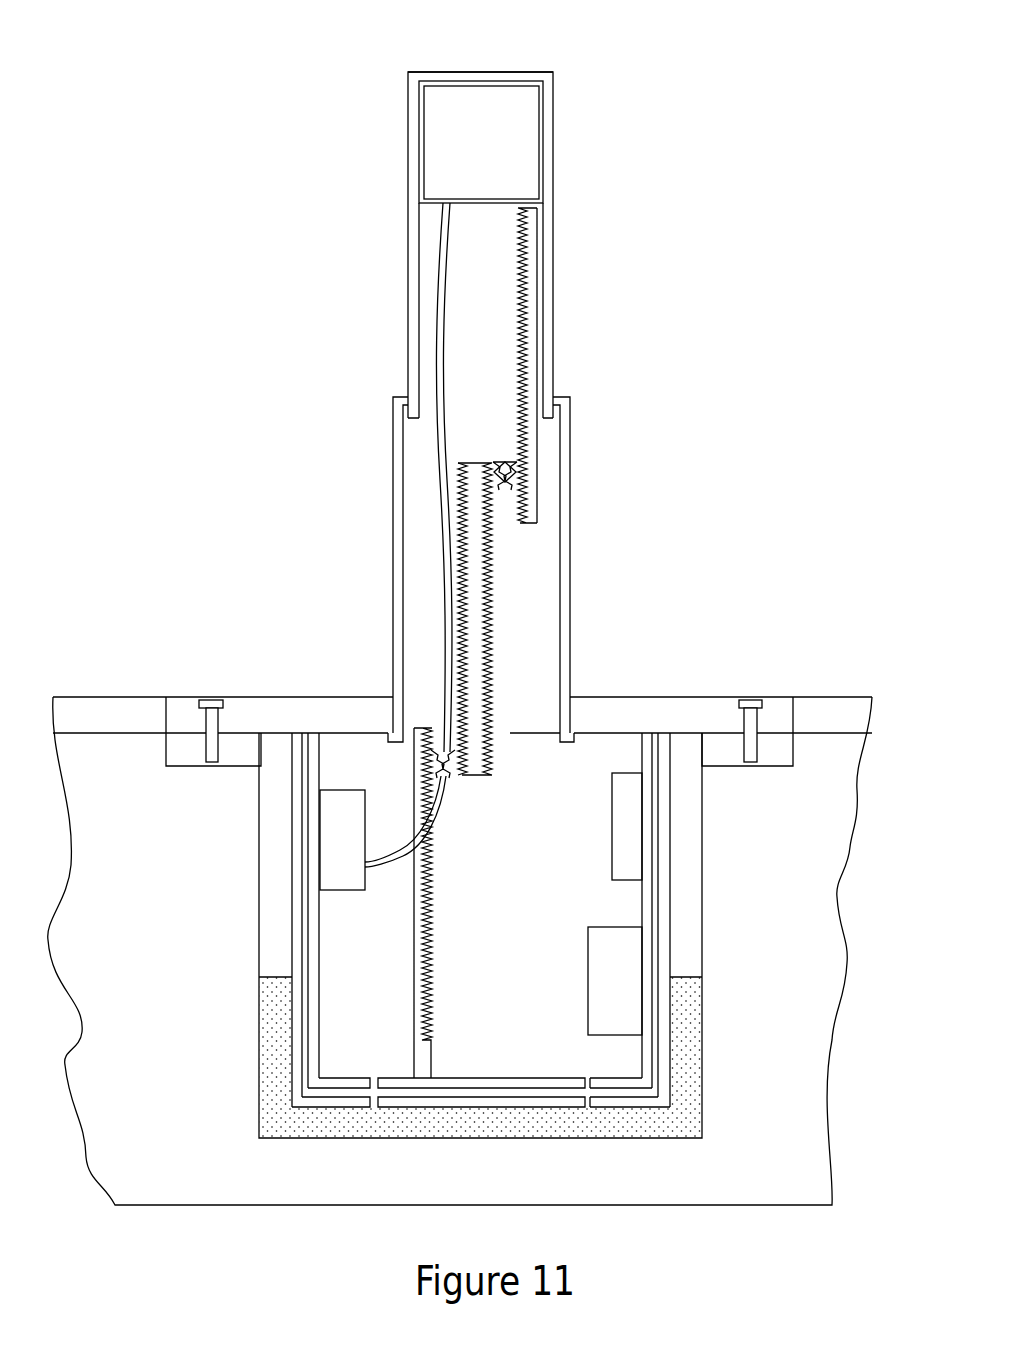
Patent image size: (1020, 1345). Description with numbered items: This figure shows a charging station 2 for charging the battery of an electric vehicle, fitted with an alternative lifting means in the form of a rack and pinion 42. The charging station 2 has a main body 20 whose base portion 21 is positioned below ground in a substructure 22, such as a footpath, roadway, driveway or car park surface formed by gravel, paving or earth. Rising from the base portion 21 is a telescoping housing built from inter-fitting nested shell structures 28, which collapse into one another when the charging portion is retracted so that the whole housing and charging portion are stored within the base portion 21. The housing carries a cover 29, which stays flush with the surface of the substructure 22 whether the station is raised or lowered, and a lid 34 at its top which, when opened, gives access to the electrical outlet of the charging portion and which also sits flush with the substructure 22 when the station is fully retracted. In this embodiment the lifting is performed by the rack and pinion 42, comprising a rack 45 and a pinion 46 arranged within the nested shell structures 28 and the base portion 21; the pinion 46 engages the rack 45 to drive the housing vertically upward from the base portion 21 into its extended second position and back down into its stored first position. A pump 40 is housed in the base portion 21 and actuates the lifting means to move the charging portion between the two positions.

The charging station 2 is at (509, 546).
The main body 20 is at (545, 908).
The base portion 21 is at (676, 963).
The substructure 22 is at (510, 142).
The nested shell structures 28 is at (548, 318).
The cover 29 is at (648, 697).
The lid 34 is at (452, 72).
The pump 40 is at (333, 817).
The rack and pinion 42 is at (505, 502).
The rack 45 is at (523, 377).
The pinion 46 is at (495, 485).